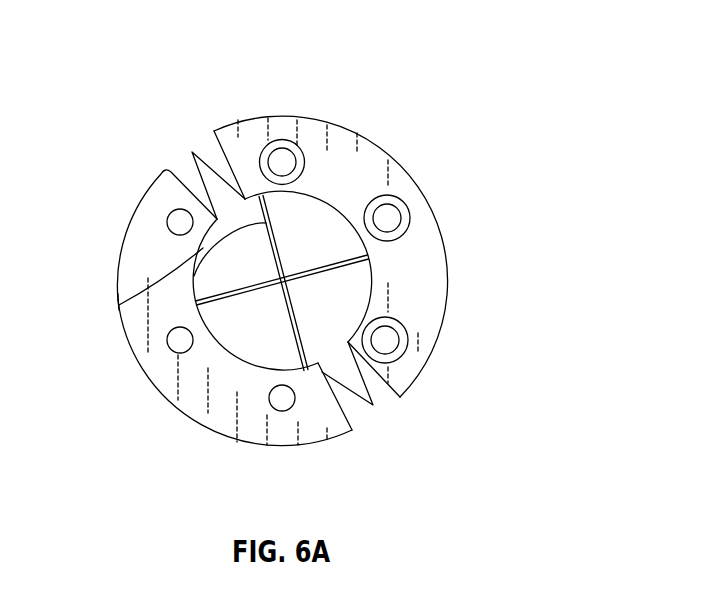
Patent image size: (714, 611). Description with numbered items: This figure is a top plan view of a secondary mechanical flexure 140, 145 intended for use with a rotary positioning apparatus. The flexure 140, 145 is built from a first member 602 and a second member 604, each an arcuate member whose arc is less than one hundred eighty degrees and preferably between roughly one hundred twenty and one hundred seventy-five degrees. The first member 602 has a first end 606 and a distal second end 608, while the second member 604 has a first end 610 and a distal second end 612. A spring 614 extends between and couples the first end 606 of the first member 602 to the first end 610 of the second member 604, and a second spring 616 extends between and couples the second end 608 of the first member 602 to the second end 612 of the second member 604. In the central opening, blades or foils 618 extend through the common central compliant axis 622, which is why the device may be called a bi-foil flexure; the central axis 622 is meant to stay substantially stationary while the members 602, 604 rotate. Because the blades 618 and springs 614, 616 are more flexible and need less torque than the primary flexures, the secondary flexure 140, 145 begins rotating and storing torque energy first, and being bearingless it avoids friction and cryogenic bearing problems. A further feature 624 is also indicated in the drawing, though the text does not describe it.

The secondary mechanical flexure 140 is at (446, 138).
The secondary mechanical flexure 145 is at (446, 138).
The first member 602 is at (172, 402).
The second member 604 is at (430, 263).
The first end of the first member 606 is at (178, 173).
The second end of the first member 608 is at (347, 422).
The first end of the second member 610 is at (221, 144).
The second end of the second member 612 is at (388, 382).
The spring 614 is at (192, 152).
The second spring 616 is at (374, 407).
The blade 618 is at (120, 290).
The central compliant axis 622 is at (292, 282).
The fastener hole 624 is at (406, 206).